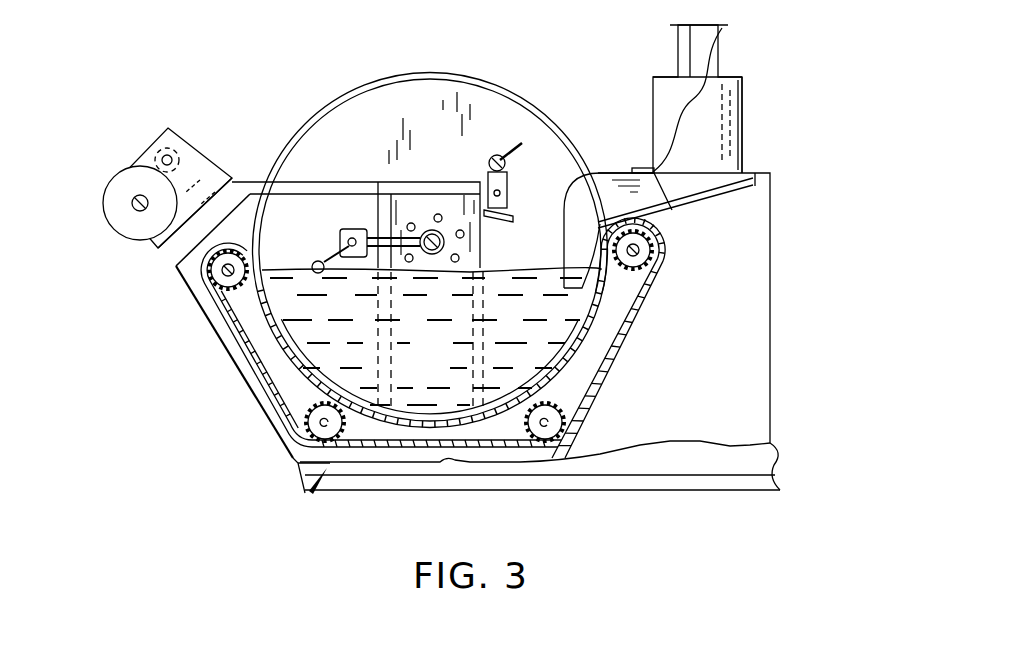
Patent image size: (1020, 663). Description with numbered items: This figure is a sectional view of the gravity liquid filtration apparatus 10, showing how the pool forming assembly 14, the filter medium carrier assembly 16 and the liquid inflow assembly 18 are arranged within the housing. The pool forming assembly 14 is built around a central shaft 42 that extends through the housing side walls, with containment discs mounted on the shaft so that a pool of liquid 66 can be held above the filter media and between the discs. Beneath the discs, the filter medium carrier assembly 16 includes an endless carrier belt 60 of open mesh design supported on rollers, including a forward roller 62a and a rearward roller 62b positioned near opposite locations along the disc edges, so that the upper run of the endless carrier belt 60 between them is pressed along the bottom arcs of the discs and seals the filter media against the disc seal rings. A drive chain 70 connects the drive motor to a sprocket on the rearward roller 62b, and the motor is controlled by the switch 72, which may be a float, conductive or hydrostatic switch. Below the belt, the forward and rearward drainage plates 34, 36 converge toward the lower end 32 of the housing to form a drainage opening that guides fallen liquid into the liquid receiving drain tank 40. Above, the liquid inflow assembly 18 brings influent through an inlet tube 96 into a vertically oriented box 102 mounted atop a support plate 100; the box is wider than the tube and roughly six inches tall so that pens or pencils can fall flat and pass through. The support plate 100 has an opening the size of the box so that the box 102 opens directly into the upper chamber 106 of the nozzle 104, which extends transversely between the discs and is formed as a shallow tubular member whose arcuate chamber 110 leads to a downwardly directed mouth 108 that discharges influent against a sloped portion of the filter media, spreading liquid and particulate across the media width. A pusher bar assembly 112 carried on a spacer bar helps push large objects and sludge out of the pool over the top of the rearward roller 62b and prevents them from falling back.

The gravity liquid filtration apparatus 10 is at (822, 172).
The pool forming assembly 14 is at (526, 86).
The filter medium carrier assembly 16 is at (270, 425).
The liquid inflow assembly 18 is at (772, 104).
The lower end 32 is at (360, 500).
The forward drainage plate 34 is at (247, 372).
The rearward drainage plate 36 is at (630, 348).
The liquid receiving drain tank 40 is at (305, 494).
The central shaft 42 is at (425, 232).
The endless carrier belt 60 is at (210, 326).
The forward roller 62a is at (655, 253).
The rearward roller 62b is at (231, 262).
The pool of liquid 66 is at (440, 377).
The drive chain 70 is at (212, 160).
The switch 72 is at (328, 256).
The inlet tube 96 is at (698, 38).
The support plate 100 is at (637, 166).
The vertically oriented box 102 is at (722, 132).
The nozzle 104 is at (577, 345).
The upper chamber 106 is at (758, 188).
The mouth 108 is at (572, 238).
The arcuate chamber 110 is at (597, 199).
The pusher bar assembly 112 is at (512, 190).